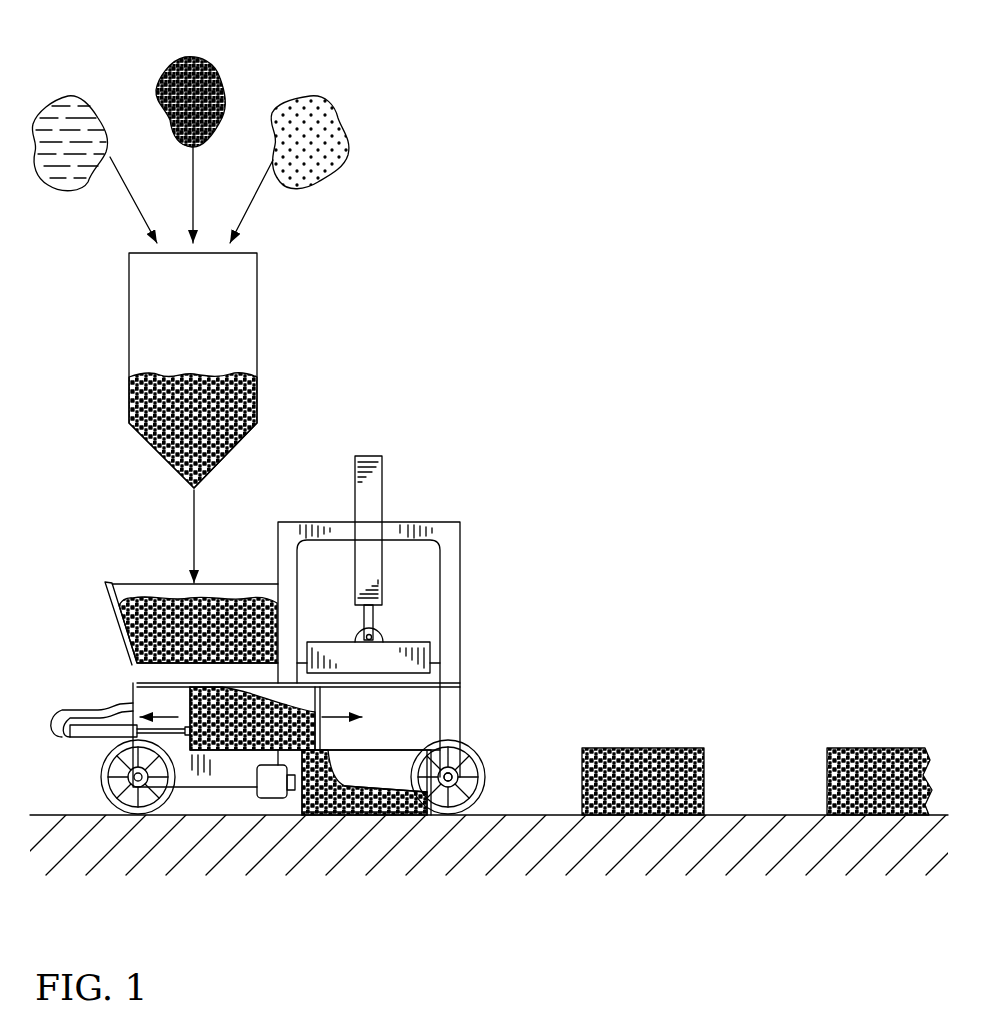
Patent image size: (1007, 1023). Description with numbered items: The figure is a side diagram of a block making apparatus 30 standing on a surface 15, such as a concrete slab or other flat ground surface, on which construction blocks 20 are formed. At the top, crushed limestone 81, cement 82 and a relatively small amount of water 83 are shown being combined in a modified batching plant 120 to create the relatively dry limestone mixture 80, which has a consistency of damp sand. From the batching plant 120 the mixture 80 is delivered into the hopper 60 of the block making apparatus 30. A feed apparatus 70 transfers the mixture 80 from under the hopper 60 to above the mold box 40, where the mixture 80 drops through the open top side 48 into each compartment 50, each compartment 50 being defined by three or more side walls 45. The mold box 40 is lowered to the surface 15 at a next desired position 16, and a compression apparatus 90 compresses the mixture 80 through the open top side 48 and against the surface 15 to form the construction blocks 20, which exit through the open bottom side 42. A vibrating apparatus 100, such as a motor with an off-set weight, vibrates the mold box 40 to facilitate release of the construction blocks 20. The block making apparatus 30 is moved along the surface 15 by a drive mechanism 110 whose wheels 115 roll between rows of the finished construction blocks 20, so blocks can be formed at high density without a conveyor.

The crushed limestone 81 is at (68, 108).
The cement 82 is at (212, 70).
The water 83 is at (330, 115).
The batching plant 120 is at (246, 340).
The mixture 80 is at (258, 402).
The block making apparatus 30 is at (330, 611).
The hopper 60 is at (160, 584).
The compression apparatus 90 is at (408, 634).
The open top side 48 is at (440, 735).
The mold box 40 is at (397, 742).
The compartment 50 is at (355, 767).
The next desired position 16 is at (368, 810).
The open bottom side 42 is at (390, 817).
The side walls 45 is at (312, 793).
The feed apparatus 70 is at (222, 757).
The vibrating apparatus 100 is at (278, 790).
The drive mechanism 110 is at (463, 773).
The wheels 115 is at (485, 787).
The surface 15 is at (92, 815).
The construction blocks 20 is at (655, 748).